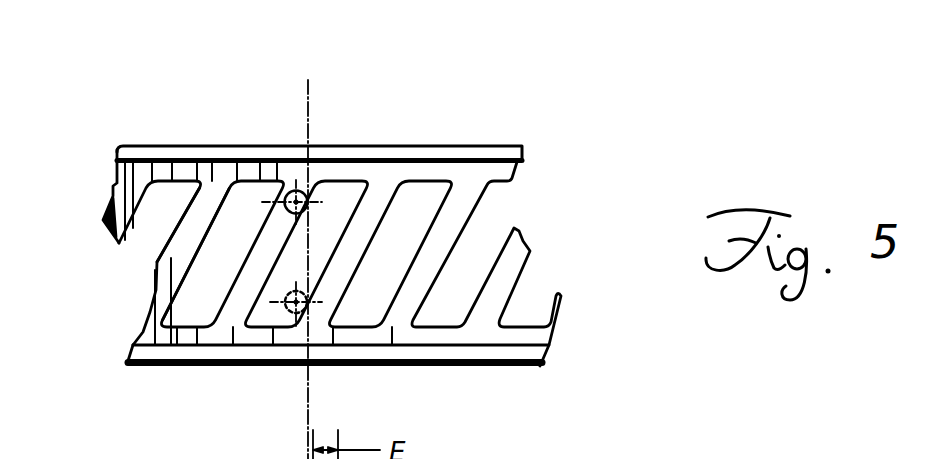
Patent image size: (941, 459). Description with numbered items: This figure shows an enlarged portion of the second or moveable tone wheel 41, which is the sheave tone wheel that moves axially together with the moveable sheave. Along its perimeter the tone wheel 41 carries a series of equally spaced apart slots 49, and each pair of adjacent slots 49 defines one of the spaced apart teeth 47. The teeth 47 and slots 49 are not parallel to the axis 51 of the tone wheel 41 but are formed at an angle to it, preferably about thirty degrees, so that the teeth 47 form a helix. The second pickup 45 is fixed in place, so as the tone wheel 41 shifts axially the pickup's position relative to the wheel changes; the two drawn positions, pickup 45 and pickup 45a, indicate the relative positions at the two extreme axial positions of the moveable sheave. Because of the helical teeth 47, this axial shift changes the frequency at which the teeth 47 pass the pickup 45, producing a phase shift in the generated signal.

The second tone wheel 41 is at (374, 143).
The second pickup 45 is at (268, 205).
The second pickup at second extreme position 45a is at (287, 305).
The teeth 47 is at (213, 197).
The slots 49 is at (438, 188).
The axis 51 is at (307, 80).